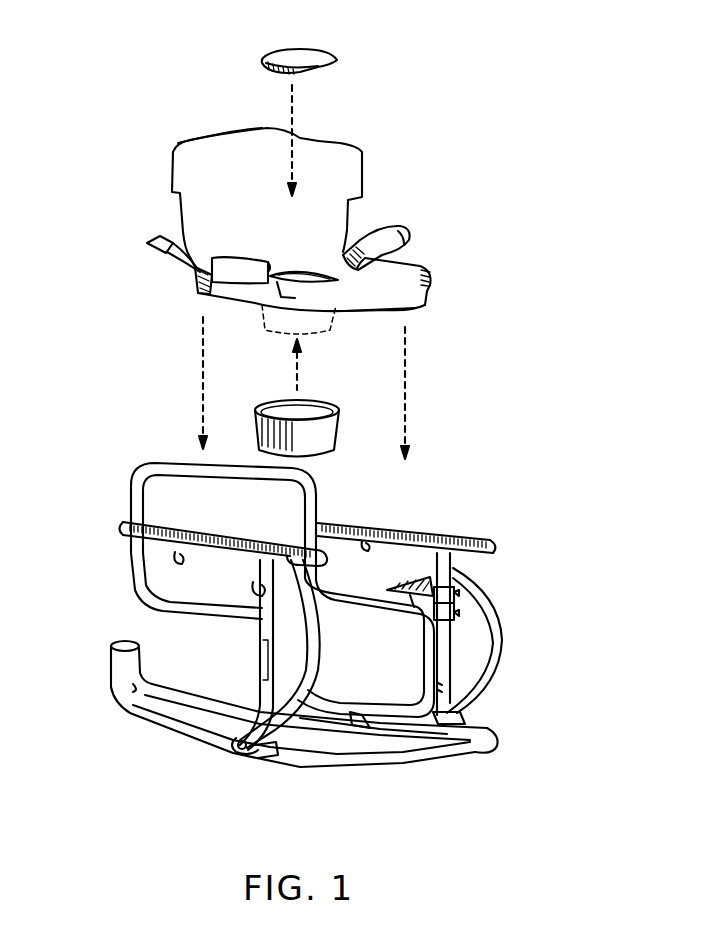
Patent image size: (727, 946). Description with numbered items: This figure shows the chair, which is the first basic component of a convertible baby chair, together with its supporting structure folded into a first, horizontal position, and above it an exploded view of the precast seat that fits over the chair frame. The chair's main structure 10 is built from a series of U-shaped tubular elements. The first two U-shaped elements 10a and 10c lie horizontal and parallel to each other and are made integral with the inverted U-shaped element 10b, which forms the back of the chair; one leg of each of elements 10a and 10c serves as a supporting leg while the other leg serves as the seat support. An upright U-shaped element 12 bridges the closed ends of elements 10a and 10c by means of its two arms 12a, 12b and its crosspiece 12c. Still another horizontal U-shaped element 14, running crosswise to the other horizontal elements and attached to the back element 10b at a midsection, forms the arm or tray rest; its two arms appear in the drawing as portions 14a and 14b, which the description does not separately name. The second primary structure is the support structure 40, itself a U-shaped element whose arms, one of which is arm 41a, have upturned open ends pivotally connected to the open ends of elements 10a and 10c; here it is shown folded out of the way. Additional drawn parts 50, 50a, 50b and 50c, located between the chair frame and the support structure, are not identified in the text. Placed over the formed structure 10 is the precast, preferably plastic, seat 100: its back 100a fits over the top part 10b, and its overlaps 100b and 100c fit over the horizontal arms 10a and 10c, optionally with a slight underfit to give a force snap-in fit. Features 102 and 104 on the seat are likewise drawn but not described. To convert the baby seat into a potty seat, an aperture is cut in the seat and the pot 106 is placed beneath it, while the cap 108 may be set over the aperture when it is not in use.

The chair main structure 10 is at (123, 506).
The first horizontal U-shaped element 10a is at (217, 610).
The inverted U-shaped element 10b is at (187, 472).
The second horizontal U-shaped element 10c is at (388, 613).
The upright U-shaped element 12 is at (448, 638).
The arm 12a is at (267, 650).
The arm 12b is at (442, 668).
The crosspiece 12c is at (320, 722).
The U-shaped element 14 is at (308, 545).
The tray left portion 14a is at (235, 540).
The tray right portion 14b is at (395, 530).
The support structure 40 is at (284, 719).
The arm 41a is at (113, 657).
The curved strut 50 is at (317, 680).
The right curved strut 50a is at (497, 667).
The pivot joint 50b is at (235, 750).
The lower strut joint 50c is at (457, 710).
The precast seat 100 is at (335, 162).
The back 100a is at (192, 150).
The overlap 100b is at (245, 268).
The overlap 100c is at (395, 272).
The finger tab 102 is at (368, 240).
The lip 104 is at (295, 270).
The pot 106 is at (310, 403).
The cap 108 is at (284, 62).